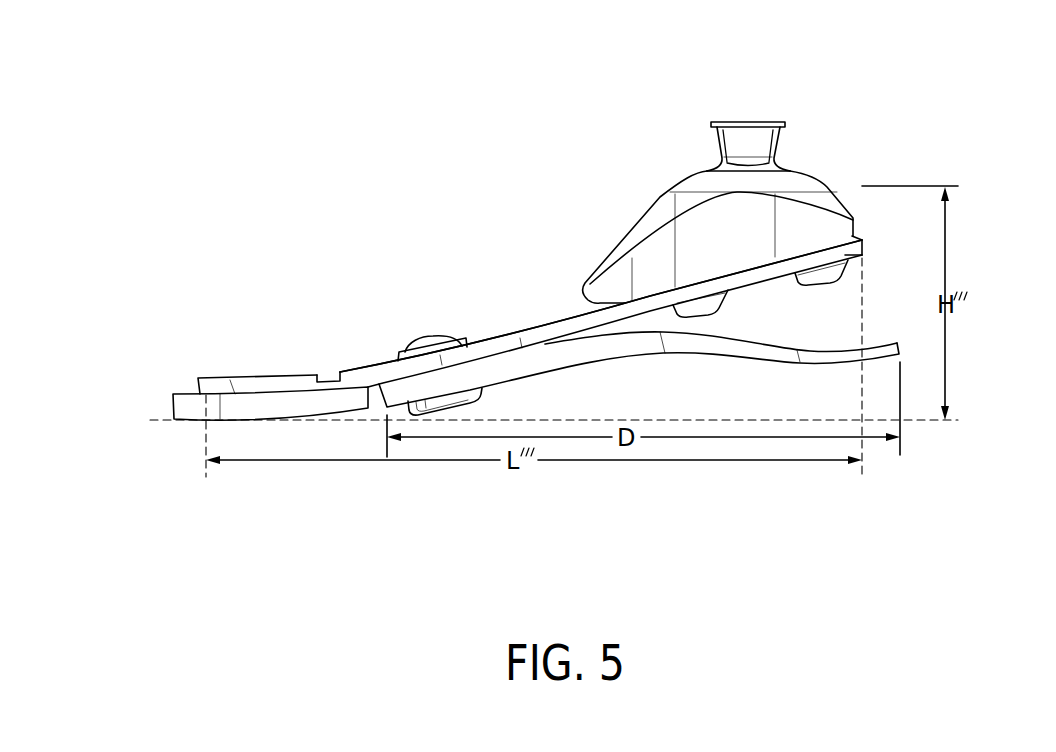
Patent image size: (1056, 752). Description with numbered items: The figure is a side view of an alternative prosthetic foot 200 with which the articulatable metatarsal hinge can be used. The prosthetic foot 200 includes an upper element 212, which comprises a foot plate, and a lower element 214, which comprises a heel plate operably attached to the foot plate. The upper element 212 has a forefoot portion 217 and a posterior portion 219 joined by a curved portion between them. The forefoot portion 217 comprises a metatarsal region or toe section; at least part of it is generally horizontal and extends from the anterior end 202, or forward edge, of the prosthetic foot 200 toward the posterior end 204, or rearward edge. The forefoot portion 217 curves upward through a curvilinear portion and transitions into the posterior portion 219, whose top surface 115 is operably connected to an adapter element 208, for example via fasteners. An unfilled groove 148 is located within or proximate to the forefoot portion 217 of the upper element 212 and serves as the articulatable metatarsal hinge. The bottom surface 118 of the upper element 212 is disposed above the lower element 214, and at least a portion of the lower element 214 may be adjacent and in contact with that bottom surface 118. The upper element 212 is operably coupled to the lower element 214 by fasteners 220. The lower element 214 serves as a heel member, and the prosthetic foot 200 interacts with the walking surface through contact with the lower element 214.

The prosthetic foot 200 is at (653, 128).
The adapter element 208 is at (749, 110).
The posterior end 204 is at (852, 230).
The bottom surface 118 is at (755, 283).
The upper element 212 is at (527, 323).
The top surface 115 is at (563, 315).
The posterior portion 219 is at (863, 252).
The forefoot portion 217 is at (278, 367).
The groove 148 is at (327, 370).
The fasteners 220 is at (425, 333).
The anterior end 202 is at (198, 392).
The lower element 214 is at (618, 367).